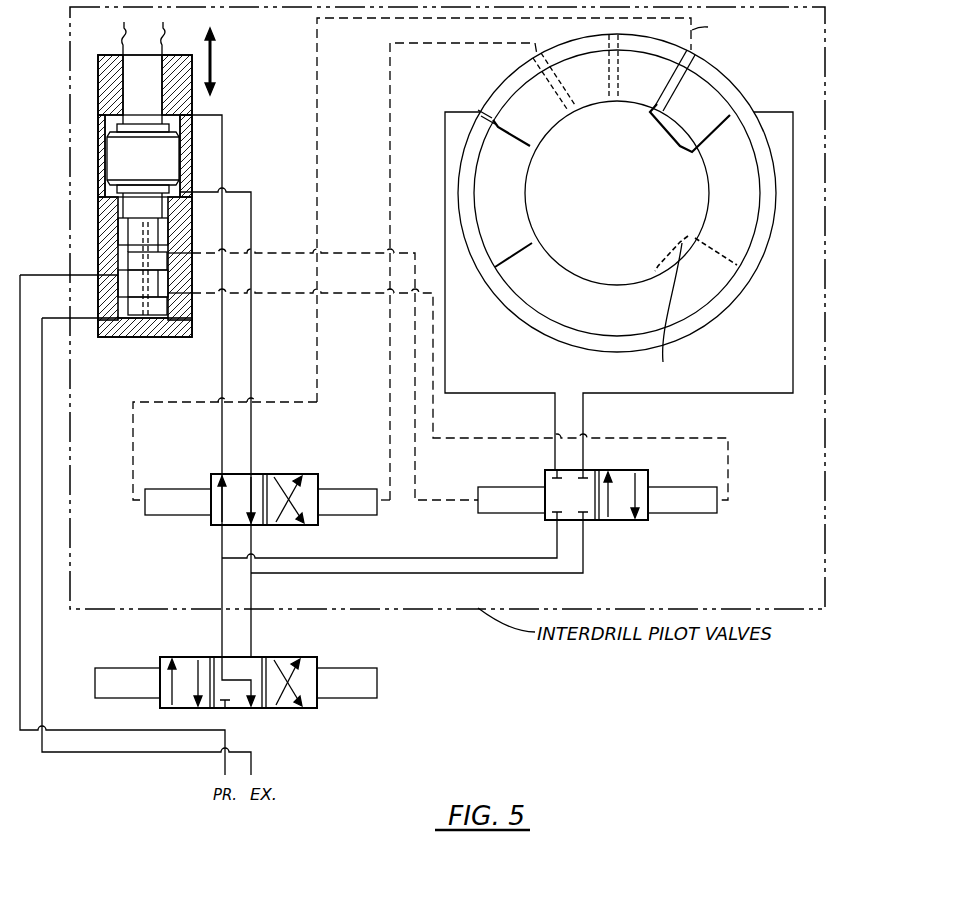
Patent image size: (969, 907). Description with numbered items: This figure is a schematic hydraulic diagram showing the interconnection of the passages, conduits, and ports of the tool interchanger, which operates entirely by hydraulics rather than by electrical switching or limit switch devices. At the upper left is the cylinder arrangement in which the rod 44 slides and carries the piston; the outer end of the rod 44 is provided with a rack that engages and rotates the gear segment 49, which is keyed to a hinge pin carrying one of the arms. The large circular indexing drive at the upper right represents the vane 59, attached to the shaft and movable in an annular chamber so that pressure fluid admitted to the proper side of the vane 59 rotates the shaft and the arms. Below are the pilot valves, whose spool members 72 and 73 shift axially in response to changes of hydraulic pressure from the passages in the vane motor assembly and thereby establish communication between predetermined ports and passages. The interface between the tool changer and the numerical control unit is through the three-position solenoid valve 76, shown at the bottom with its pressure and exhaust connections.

The rod 44 is at (135, 90).
The gear segment 49 is at (170, 158).
The vane 59 is at (493, 250).
The spool member 72 is at (620, 480).
The spool member 73 is at (268, 490).
The three-position solenoid valve 76 is at (279, 675).